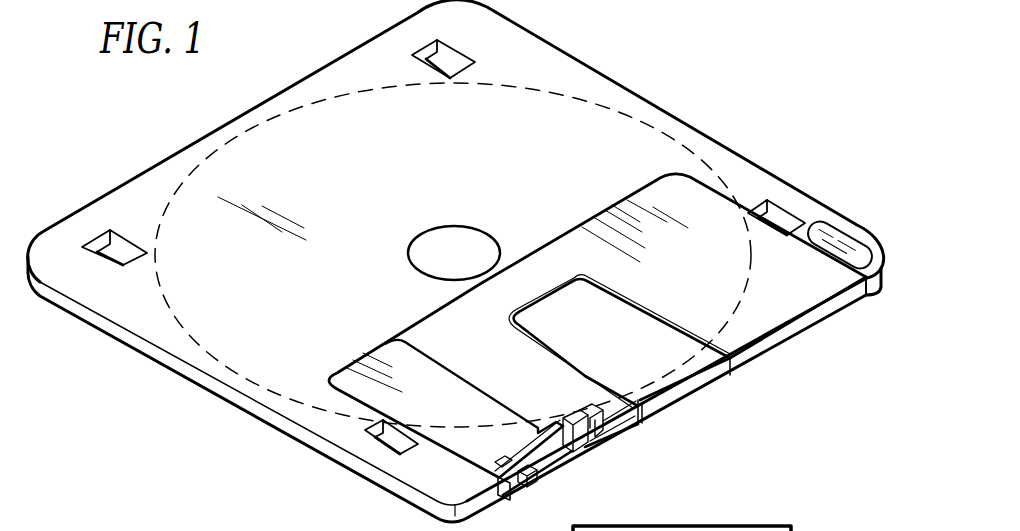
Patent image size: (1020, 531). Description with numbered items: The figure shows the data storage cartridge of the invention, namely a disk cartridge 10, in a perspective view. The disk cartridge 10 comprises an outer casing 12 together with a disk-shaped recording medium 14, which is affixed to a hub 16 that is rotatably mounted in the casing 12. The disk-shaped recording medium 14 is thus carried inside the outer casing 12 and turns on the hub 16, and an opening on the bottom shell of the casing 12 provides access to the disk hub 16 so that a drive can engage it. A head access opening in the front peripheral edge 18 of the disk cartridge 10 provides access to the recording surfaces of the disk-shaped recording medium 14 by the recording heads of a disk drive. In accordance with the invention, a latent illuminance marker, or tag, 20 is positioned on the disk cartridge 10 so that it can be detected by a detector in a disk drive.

The disk cartridge 10 is at (157, 406).
The outer casing 12 is at (561, 52).
The disk-shaped recording medium 14 is at (666, 372).
The hub 16 is at (420, 232).
The front peripheral edge 18 is at (641, 408).
The latent illuminance marker 20 is at (853, 250).